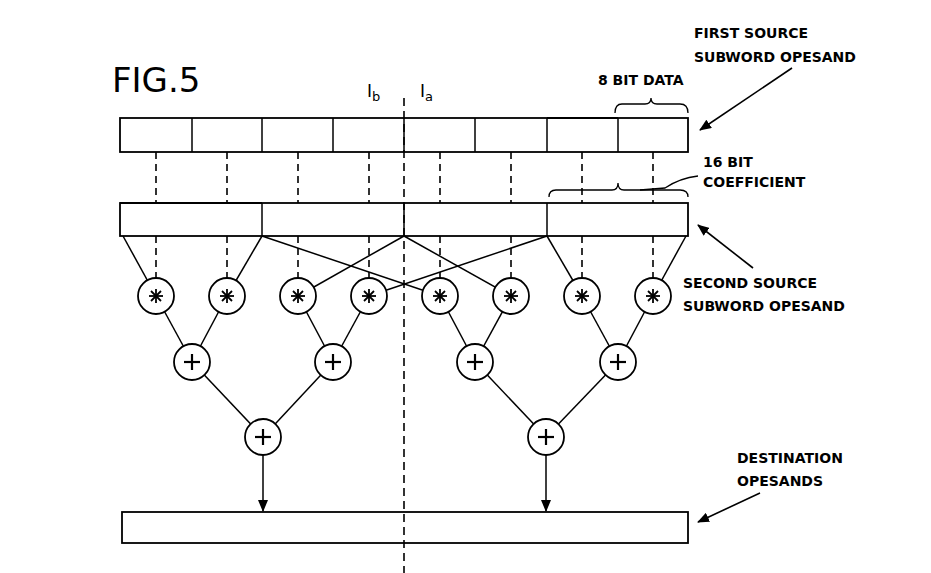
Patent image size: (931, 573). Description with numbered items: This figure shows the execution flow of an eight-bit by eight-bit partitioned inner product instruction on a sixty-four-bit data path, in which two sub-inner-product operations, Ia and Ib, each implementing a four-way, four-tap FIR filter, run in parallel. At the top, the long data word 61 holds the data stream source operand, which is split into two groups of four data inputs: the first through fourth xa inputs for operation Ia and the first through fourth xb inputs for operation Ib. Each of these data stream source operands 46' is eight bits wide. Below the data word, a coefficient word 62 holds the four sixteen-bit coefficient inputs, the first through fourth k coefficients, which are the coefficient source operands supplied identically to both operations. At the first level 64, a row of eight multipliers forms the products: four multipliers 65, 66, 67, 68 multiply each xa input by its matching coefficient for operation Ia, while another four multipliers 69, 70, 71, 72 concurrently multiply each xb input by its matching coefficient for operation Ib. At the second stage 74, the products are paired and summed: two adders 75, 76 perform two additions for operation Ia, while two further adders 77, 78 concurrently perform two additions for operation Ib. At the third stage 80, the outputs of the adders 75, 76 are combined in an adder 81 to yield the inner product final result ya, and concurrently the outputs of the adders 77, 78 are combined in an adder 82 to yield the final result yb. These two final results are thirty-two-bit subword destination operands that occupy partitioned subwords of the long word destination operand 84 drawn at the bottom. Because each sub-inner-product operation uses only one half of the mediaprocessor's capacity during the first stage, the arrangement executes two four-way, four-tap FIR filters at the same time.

The long data word 61 is at (116, 128).
The coefficient register (second source subword operand) 62 is at (116, 209).
The data stream source operands 46' is at (576, 90).
The first level 64 is at (128, 297).
The multiplier 65 is at (428, 311).
The multiplier 66 is at (524, 311).
The multiplier 67 is at (570, 311).
The multiplier 68 is at (666, 311).
The multiplier 69 is at (143, 309).
The multiplier 70 is at (240, 311).
The multiplier 71 is at (287, 311).
The multiplier 72 is at (382, 311).
The second stage 74 is at (128, 365).
The adder 75 is at (462, 378).
The adder 76 is at (622, 380).
The adder 77 is at (178, 375).
The adder 78 is at (349, 373).
The third stage 80 is at (128, 442).
The adder 81 is at (564, 440).
The adder 82 is at (281, 440).
The long word destination operand 84 is at (118, 520).